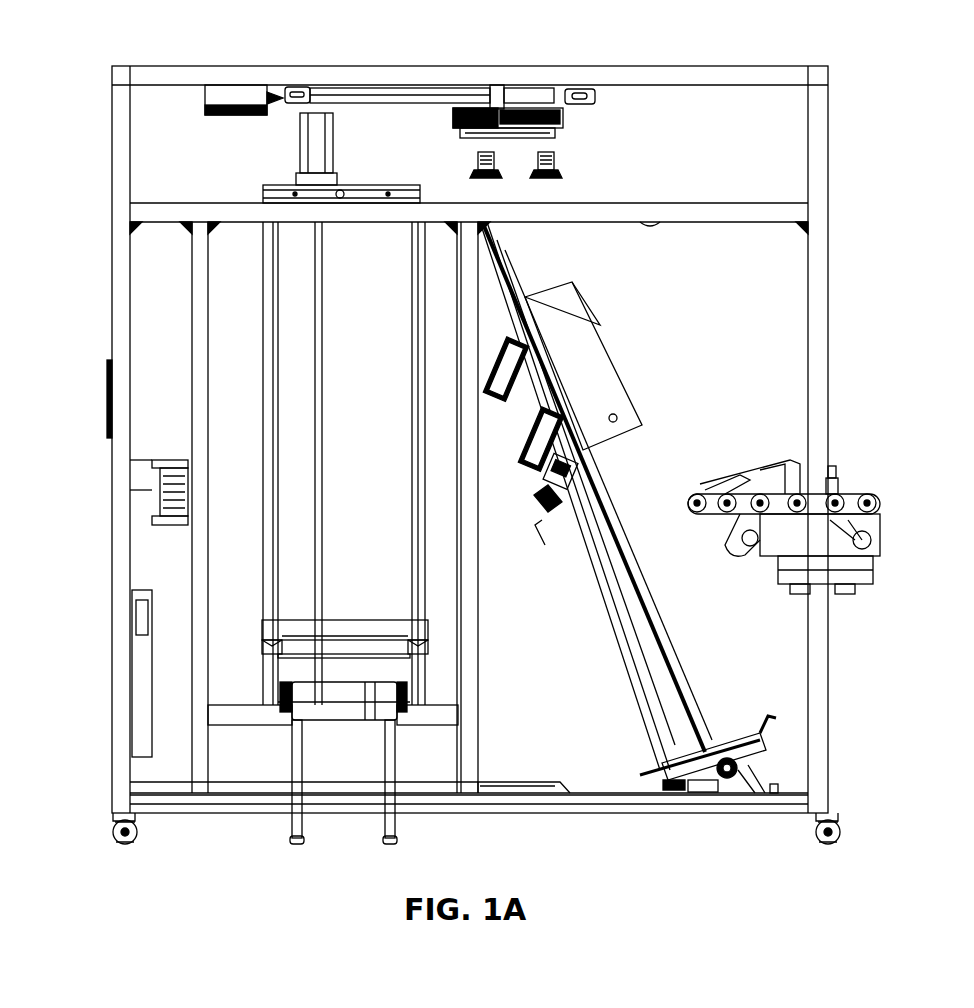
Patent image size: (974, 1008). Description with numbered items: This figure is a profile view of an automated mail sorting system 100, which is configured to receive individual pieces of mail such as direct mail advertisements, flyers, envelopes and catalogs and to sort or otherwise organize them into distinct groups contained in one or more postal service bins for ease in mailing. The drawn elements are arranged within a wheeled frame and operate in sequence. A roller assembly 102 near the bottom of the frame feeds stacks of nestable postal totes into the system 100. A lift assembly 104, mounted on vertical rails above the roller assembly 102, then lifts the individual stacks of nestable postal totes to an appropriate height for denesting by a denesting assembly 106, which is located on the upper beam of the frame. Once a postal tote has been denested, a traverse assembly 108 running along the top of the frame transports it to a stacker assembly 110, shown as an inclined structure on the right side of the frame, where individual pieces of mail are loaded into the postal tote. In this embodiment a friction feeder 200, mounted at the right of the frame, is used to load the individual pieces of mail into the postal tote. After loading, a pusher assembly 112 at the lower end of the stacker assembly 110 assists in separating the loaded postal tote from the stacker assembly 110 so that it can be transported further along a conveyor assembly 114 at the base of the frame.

The automated mail sorting system 100 is at (848, 178).
The roller assembly 102 is at (312, 692).
The lift assembly 104 is at (292, 620).
The denesting assembly 106 is at (315, 197).
The traverse assembly 108 is at (478, 108).
The stacker assembly 110 is at (590, 383).
The pusher assembly 112 is at (745, 782).
The conveyor assembly 114 is at (243, 782).
The friction feeder 200 is at (858, 480).